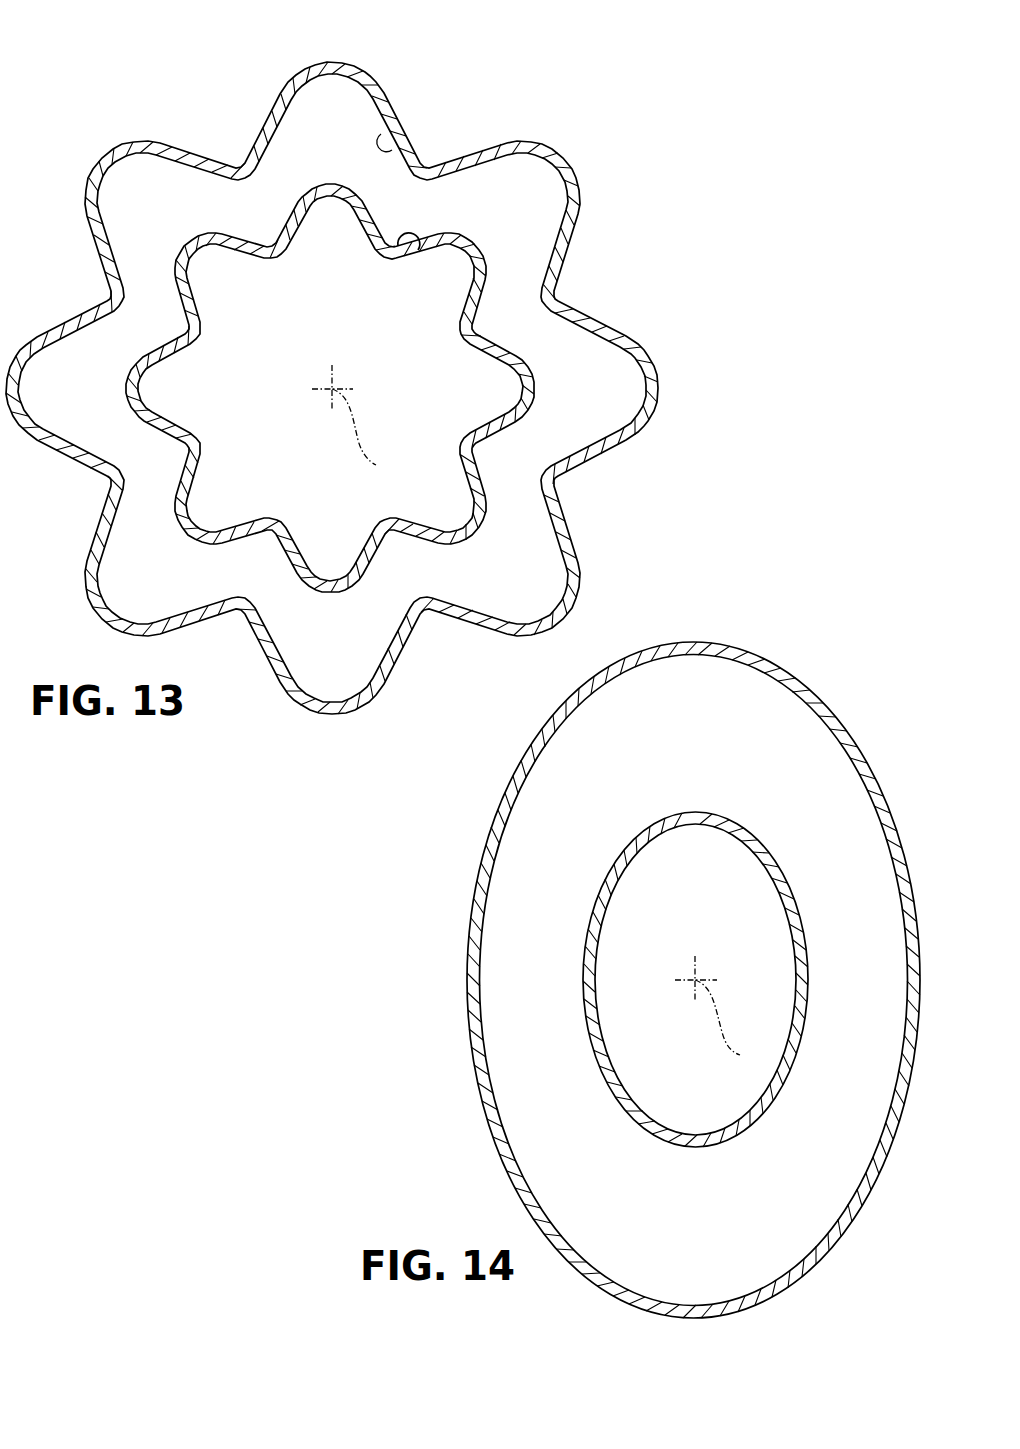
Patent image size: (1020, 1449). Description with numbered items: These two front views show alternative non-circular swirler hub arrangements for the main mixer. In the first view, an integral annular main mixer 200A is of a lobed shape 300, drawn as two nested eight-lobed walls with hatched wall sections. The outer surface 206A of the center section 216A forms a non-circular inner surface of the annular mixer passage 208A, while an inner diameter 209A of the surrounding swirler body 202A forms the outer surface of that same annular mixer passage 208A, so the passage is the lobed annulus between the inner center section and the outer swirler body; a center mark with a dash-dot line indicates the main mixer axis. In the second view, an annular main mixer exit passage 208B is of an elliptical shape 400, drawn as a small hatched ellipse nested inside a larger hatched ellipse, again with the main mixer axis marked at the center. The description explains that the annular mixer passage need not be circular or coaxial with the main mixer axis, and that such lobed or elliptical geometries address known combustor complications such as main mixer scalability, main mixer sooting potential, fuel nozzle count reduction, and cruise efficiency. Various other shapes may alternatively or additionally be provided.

In FIG. 13, the integral annular main mixer 200A is at (333, 50).
In FIG. 13, the swirler body 202A is at (356, 64).
In FIG. 13, the lobed shape 300 is at (195, 140).
In FIG. 13, the annular mixer passage 208A is at (330, 388).
In FIG. 13, the inner diameter 209A is at (393, 150).
In FIG. 13, the center section 216A is at (316, 394).
In FIG. 13, the outer surface 206A is at (418, 250).
In FIG. 14, the elliptical shape 400 is at (858, 719).
In FIG. 14, the annular main mixer exit passage 208B is at (695, 934).